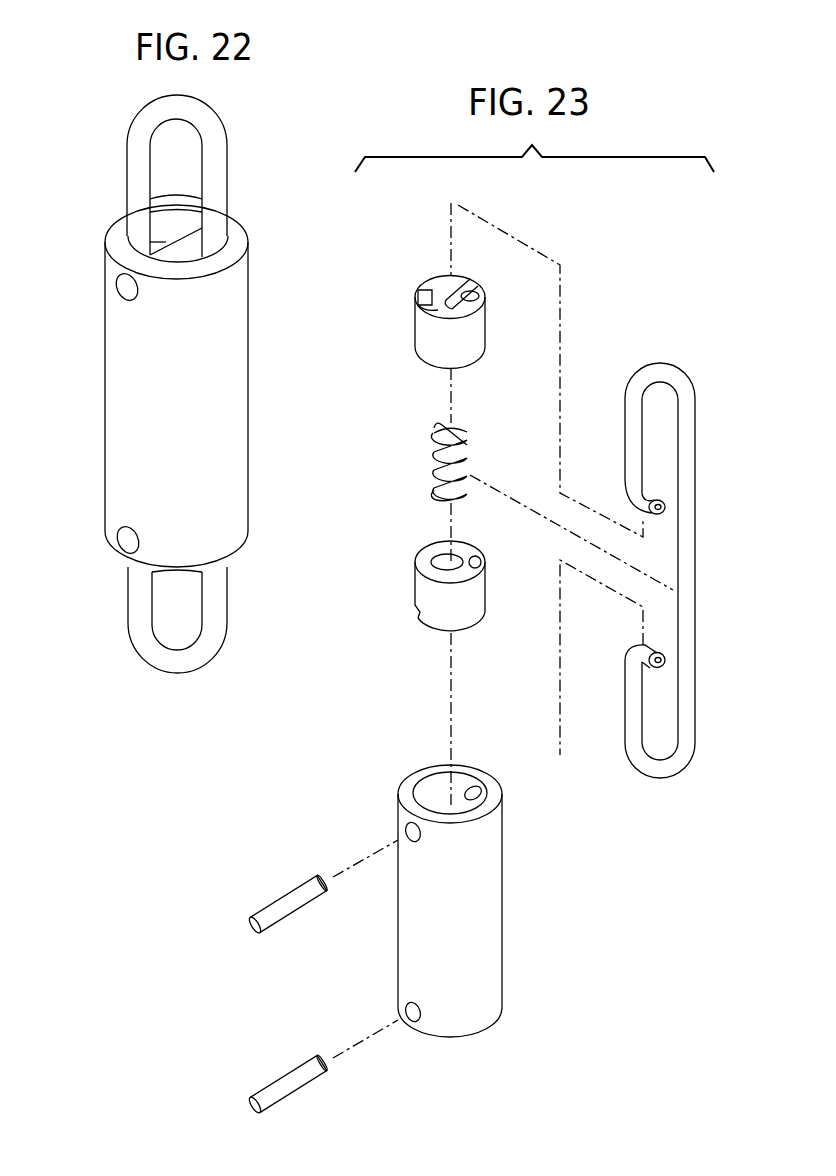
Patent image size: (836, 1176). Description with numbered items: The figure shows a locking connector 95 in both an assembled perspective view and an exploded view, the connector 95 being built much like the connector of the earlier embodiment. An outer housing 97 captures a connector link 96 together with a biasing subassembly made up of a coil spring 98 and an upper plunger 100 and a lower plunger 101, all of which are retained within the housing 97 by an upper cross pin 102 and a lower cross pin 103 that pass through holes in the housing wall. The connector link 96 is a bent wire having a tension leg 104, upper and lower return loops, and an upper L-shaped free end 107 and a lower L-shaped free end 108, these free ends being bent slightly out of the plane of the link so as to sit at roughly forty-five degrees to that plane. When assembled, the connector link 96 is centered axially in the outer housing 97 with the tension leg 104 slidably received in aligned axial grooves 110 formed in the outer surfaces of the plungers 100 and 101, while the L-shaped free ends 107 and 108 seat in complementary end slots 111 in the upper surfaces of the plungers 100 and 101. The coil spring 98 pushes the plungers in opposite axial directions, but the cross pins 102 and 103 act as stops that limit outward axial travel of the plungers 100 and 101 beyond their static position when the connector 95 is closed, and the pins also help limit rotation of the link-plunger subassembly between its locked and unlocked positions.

In FIG. 22, the connector 95 is at (97, 205).
In FIG. 23, the connector 95 is at (605, 365).
In FIG. 22, the connector link 96 is at (213, 215).
In FIG. 23, the connector link 96 is at (685, 533).
In FIG. 22, the outer housing 97 is at (115, 427).
In FIG. 23, the outer housing 97 is at (487, 917).
In FIG. 23, the coil spring 98 is at (432, 465).
In FIG. 23, the upper plunger 100 is at (420, 340).
In FIG. 23, the lower plunger 101 is at (416, 595).
In FIG. 22, the upper cross pin 102 is at (127, 287).
In FIG. 23, the upper cross pin 102 is at (290, 895).
In FIG. 22, the lower cross pin 103 is at (128, 540).
In FIG. 23, the lower cross pin 103 is at (295, 1085).
In FIG. 22, the tension leg 104 is at (218, 580).
In FIG. 23, the tension leg 104 is at (688, 617).
In FIG. 23, the upper L-shaped free end 107 is at (645, 505).
In FIG. 23, the lower L-shaped free end 108 is at (660, 672).
In FIG. 23, the axial grooves 110 is at (472, 297).
In FIG. 23, the end slots 111 is at (430, 297).